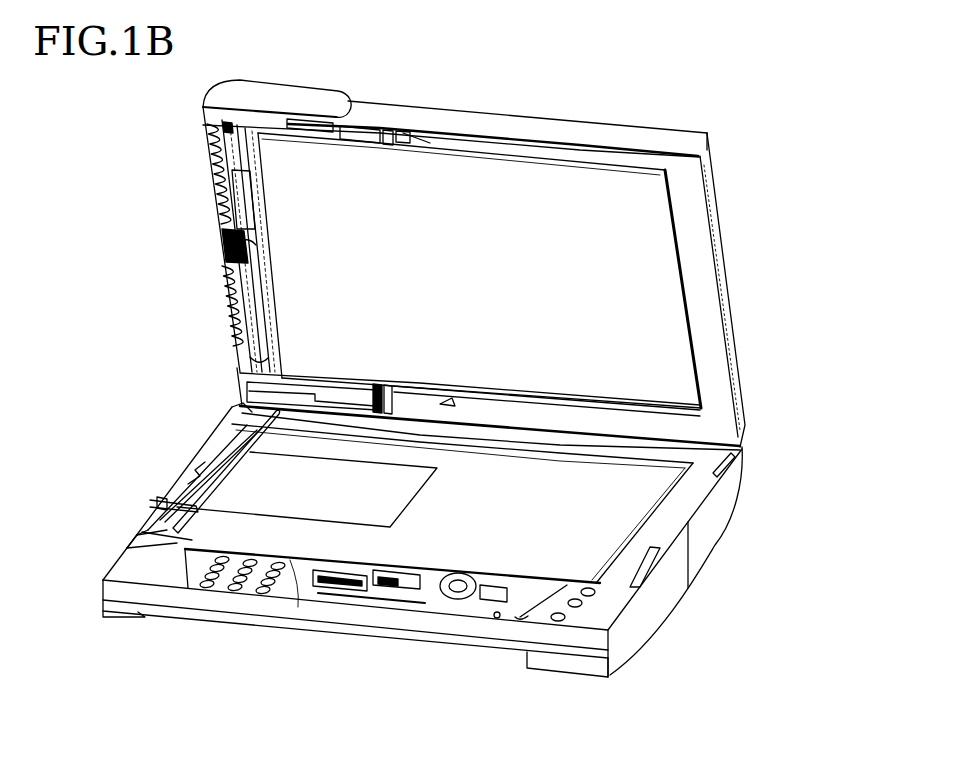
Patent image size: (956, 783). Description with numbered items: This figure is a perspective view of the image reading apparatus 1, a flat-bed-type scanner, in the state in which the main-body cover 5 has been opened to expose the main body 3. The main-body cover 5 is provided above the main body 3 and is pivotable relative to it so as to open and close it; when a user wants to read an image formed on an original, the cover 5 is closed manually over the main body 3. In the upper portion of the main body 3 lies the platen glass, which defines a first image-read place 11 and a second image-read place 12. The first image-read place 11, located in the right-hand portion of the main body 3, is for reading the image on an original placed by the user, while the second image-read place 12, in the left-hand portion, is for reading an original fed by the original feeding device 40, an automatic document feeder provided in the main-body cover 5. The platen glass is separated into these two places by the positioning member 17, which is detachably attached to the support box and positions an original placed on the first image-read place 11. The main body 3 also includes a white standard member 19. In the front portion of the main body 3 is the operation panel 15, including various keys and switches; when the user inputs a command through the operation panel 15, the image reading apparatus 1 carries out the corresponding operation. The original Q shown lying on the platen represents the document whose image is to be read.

The image reading apparatus 1 is at (794, 299).
The main body 3 is at (707, 538).
The main-body cover 5 is at (692, 231).
The first image-read place 11 is at (305, 537).
The second image-read place 12 is at (193, 500).
The operation panel 15 is at (413, 605).
The positioning member 17 is at (197, 552).
The white standard member 19 is at (232, 456).
The original feeding device 40 is at (218, 227).
The document Q is at (407, 510).